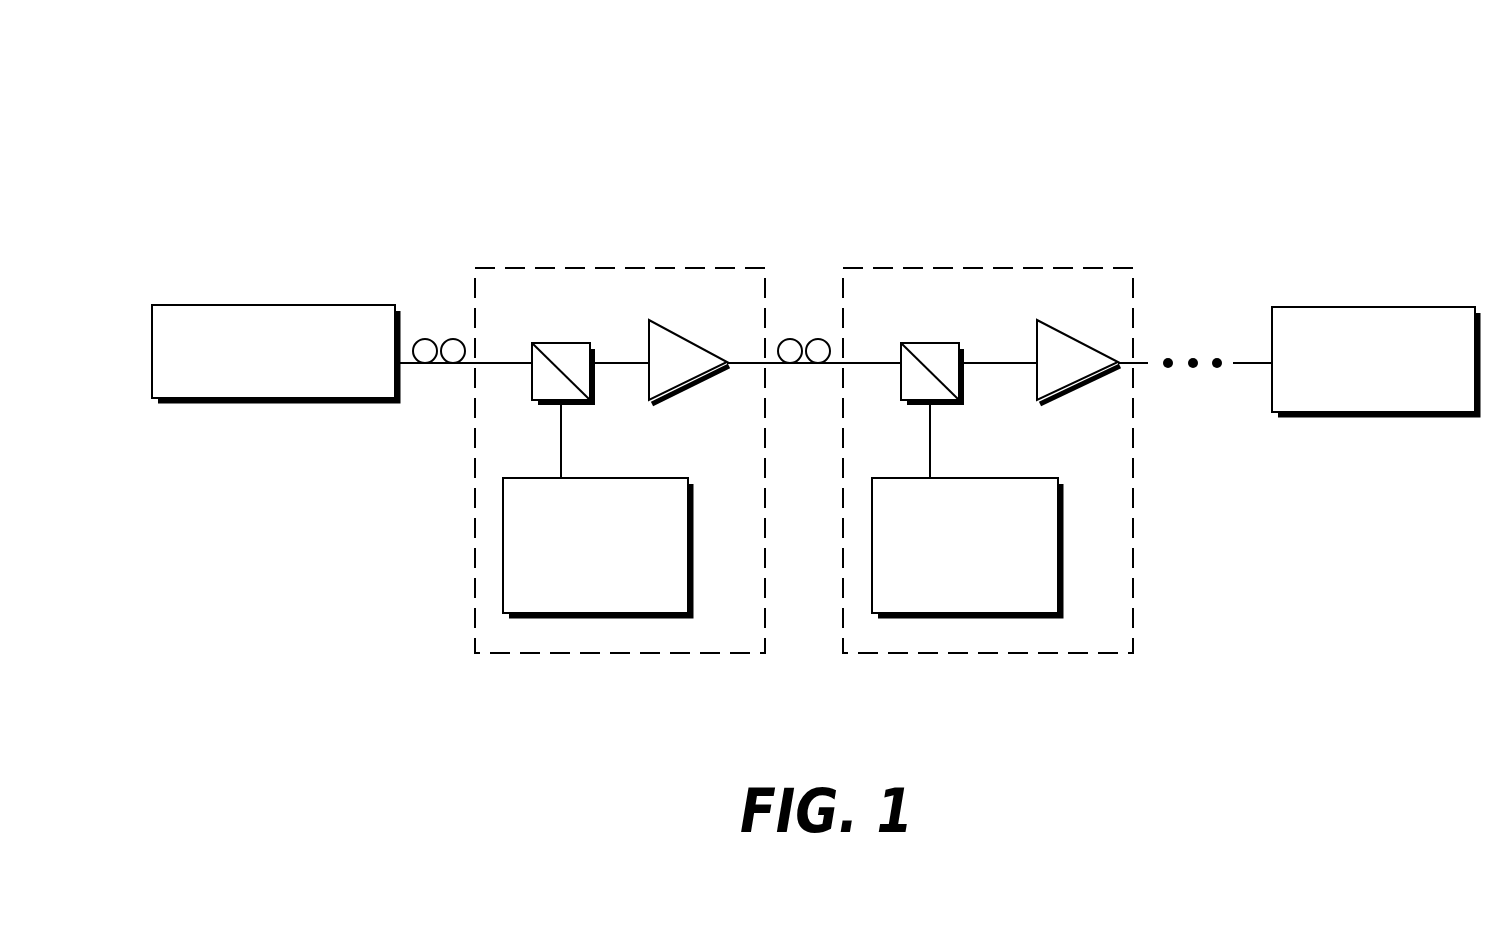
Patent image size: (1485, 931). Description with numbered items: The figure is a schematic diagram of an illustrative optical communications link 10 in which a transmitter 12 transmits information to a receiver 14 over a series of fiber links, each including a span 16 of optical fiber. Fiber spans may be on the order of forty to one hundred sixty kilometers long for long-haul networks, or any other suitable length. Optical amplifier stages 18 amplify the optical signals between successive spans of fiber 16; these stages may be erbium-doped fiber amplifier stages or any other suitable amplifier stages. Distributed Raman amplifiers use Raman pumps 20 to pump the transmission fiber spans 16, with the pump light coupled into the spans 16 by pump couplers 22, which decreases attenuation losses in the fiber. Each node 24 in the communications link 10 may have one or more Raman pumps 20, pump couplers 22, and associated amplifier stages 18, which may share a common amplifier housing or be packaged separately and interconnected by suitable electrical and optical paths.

The optical communications link 10 is at (897, 124).
The transmitter 12 is at (318, 305).
The receiver 14 is at (1358, 307).
The span of optical fiber 16 is at (434, 318).
The optical amplifier stage 18 is at (670, 335).
The Raman pump 20 is at (690, 525).
The pump coupler 22 is at (560, 343).
The node 24 is at (600, 268).